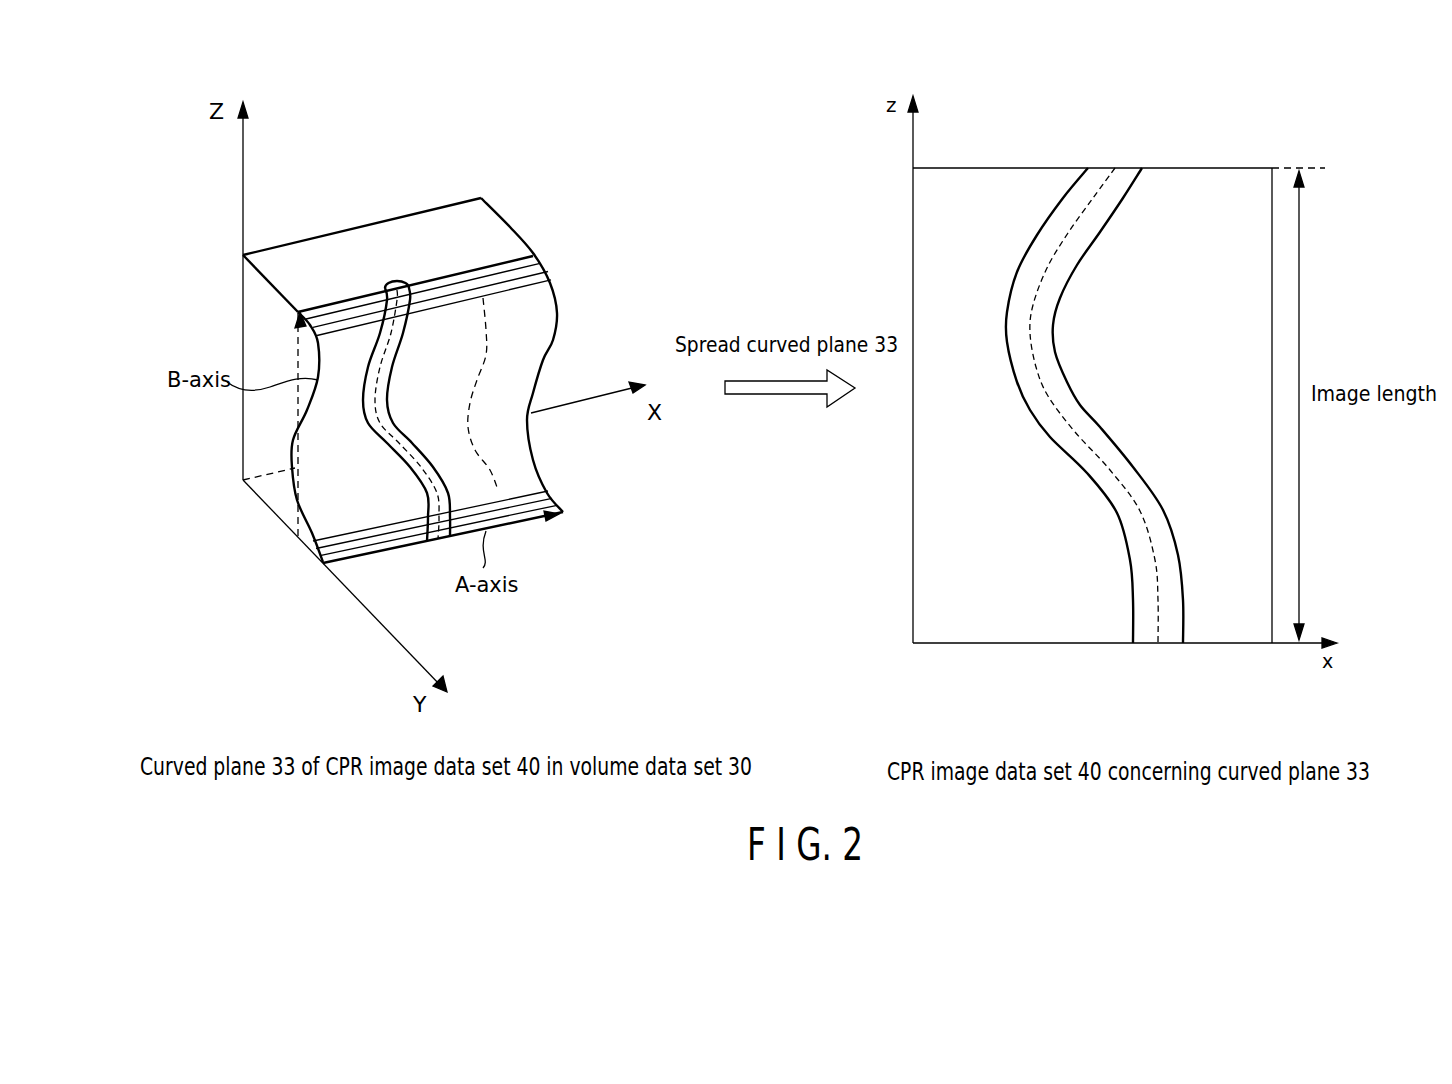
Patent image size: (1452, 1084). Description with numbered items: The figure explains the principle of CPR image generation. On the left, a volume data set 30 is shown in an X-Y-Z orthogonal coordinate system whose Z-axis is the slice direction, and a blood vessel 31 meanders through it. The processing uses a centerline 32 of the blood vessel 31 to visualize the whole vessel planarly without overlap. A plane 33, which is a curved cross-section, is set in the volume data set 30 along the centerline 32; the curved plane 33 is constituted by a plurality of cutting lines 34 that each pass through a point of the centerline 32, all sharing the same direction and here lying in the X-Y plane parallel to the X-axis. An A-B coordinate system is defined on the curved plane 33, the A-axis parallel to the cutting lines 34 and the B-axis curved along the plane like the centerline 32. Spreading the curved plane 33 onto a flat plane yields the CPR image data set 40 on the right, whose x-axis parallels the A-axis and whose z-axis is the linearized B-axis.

The volume data set 30 is at (434, 233).
The blood vessel 31 is at (368, 433).
The centerline 32 is at (397, 457).
The curved plane 33 is at (557, 326).
The cutting lines 34 is at (539, 263).
The CPR image data set 40 is at (1023, 630).